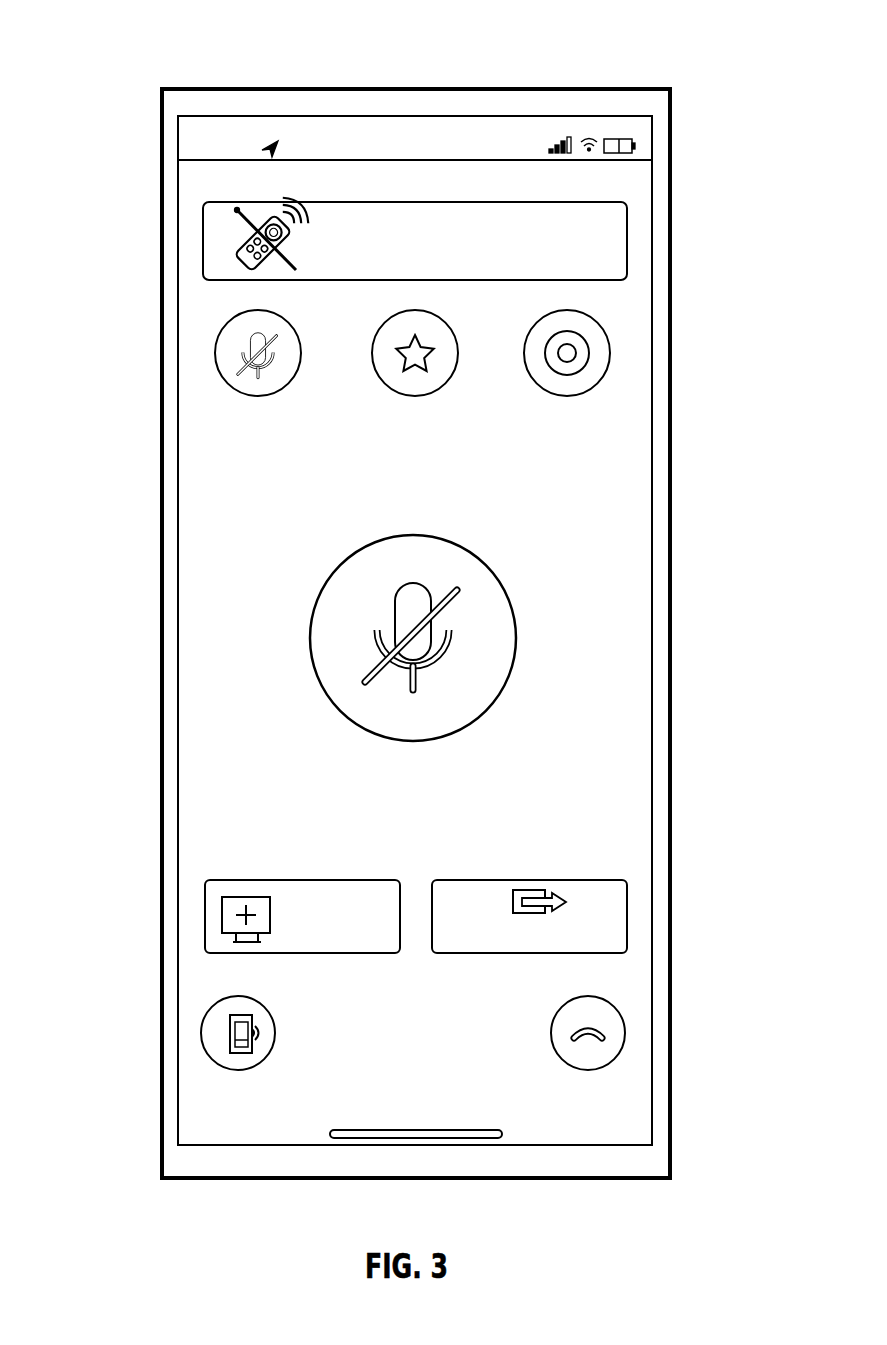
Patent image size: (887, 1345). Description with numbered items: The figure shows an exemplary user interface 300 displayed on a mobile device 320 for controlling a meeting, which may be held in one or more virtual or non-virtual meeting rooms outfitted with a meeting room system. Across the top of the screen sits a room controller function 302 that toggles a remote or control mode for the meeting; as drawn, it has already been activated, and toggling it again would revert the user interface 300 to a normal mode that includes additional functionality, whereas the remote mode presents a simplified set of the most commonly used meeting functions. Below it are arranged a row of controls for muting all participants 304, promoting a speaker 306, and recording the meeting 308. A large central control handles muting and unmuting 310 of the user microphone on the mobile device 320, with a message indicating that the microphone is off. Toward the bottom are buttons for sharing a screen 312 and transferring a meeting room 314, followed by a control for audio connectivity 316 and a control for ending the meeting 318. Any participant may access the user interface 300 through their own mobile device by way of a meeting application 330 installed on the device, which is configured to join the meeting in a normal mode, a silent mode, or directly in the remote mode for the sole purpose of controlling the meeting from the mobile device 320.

The user interface 300 is at (110, 38).
The room controller function 302 is at (612, 238).
The muting all participants control 304 is at (228, 338).
The promoting a speaker control 306 is at (385, 320).
The recording the meeting control 308 is at (602, 345).
The muting/unmuting control 310 is at (357, 612).
The sharing a screen control 312 is at (222, 900).
The transferring a meeting room control 314 is at (620, 892).
The audio connectivity control 316 is at (228, 1032).
The ending the meeting control 318 is at (607, 1020).
The mobile device 320 is at (265, 1184).
The meeting application 330 is at (564, 1153).